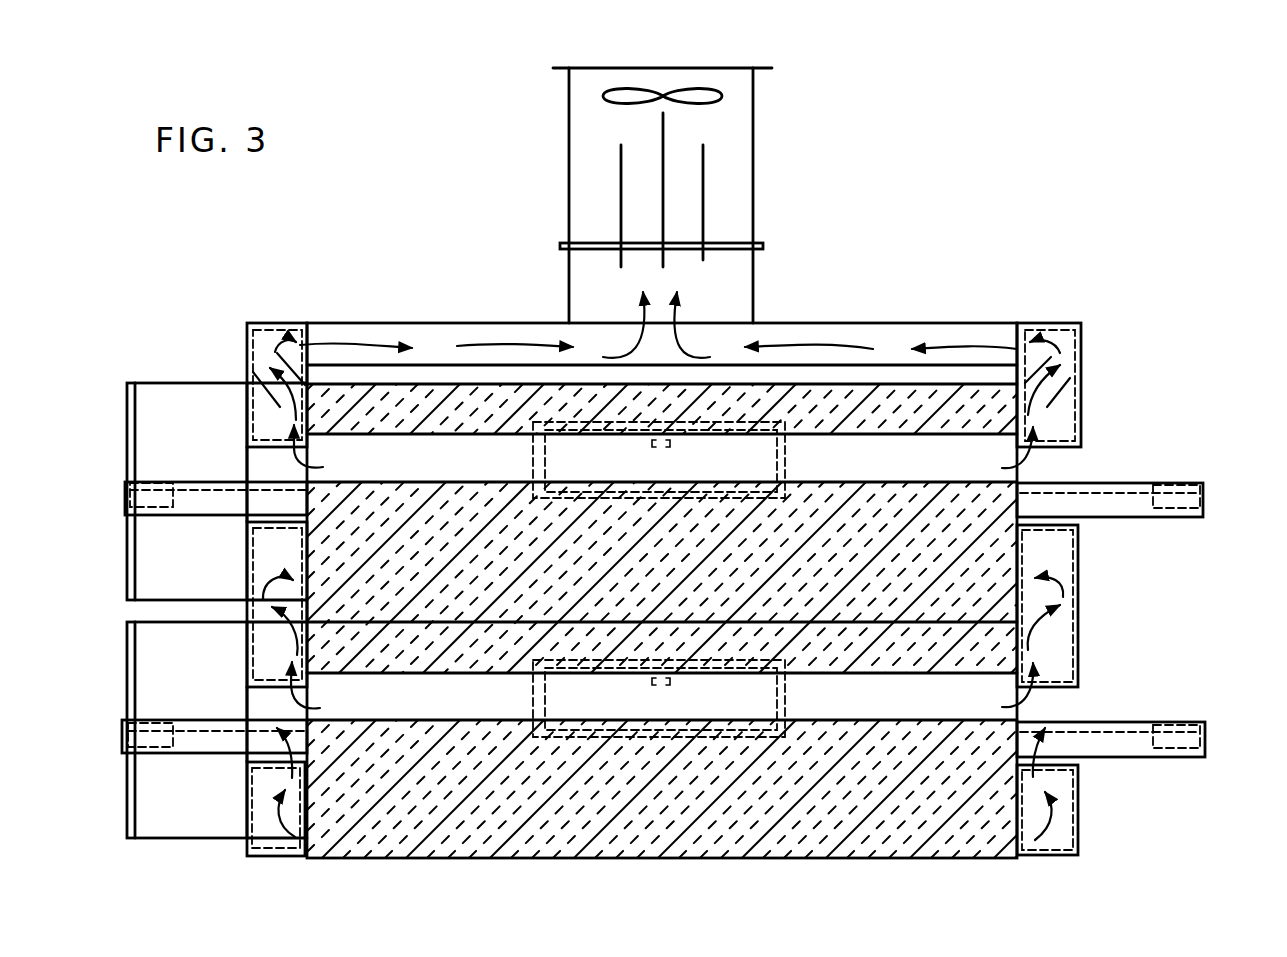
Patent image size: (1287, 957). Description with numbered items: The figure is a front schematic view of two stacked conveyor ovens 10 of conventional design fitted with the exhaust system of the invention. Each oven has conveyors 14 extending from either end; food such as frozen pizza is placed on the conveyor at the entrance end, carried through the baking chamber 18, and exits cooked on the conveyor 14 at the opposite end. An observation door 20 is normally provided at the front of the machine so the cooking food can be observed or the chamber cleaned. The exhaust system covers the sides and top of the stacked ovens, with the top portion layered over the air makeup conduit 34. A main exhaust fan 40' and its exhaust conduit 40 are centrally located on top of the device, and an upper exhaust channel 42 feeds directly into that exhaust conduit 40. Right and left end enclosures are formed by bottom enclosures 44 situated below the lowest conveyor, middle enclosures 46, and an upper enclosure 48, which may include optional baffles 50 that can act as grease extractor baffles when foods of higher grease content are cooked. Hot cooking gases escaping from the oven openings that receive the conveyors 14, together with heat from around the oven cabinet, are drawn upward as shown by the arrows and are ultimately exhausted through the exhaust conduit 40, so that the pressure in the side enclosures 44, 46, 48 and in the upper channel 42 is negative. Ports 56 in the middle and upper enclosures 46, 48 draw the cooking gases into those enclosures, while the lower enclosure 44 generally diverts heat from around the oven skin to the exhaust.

The stacked conveyor oven 10 is at (1017, 637).
The conveyor 14 is at (125, 493).
The baking chamber 18 is at (446, 468).
The observation door 20 is at (785, 462).
The air makeup conduit 34 is at (435, 364).
The exhaust conduit 40 is at (688, 213).
The main exhaust fan 40' is at (694, 62).
The upper exhaust channel 42 is at (392, 323).
The bottom enclosure 44 is at (247, 792).
The middle enclosure 46 is at (247, 550).
The upper enclosure 48 is at (247, 407).
The baffle 50 is at (273, 360).
The port 56 is at (285, 452).